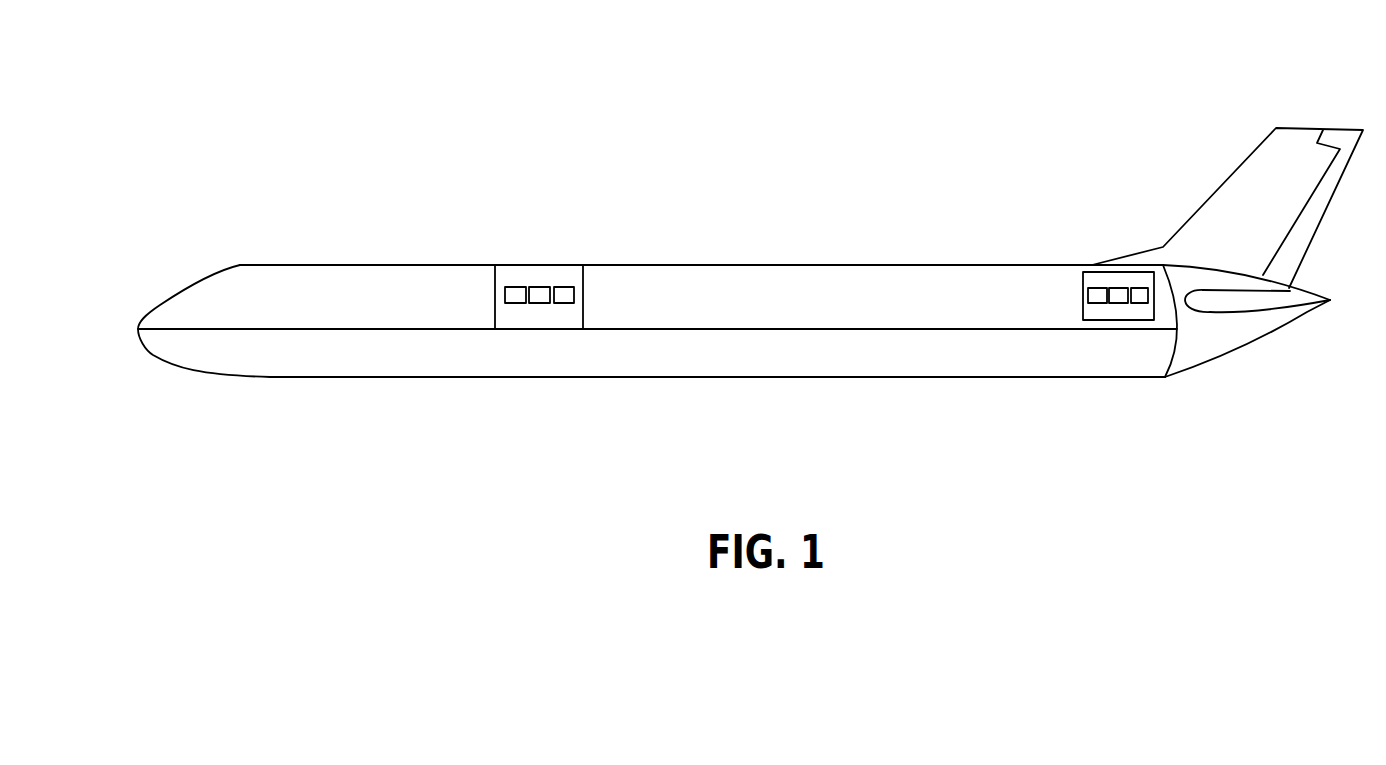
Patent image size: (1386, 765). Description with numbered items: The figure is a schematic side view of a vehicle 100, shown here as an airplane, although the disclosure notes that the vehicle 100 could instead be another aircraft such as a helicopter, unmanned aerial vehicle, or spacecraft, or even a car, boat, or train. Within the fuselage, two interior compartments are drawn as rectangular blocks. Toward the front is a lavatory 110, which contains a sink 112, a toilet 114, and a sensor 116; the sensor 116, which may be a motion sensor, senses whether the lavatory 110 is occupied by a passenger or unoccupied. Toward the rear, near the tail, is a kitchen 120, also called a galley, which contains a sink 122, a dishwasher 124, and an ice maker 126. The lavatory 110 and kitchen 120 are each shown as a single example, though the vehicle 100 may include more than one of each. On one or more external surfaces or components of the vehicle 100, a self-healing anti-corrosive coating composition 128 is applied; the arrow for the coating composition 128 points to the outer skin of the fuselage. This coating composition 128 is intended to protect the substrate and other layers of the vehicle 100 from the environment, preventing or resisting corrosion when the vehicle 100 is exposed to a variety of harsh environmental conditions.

The vehicle 100 is at (346, 90).
The lavatory 110 is at (504, 266).
The sink 112 is at (504, 297).
The toilet 114 is at (541, 305).
The sensor 116 is at (563, 305).
The kitchen 120 is at (1094, 266).
The sink 122 is at (1094, 305).
The dishwasher 124 is at (1120, 305).
The ice maker 126 is at (1140, 305).
The self-healing anti-corrosive coating composition 128 is at (766, 253).